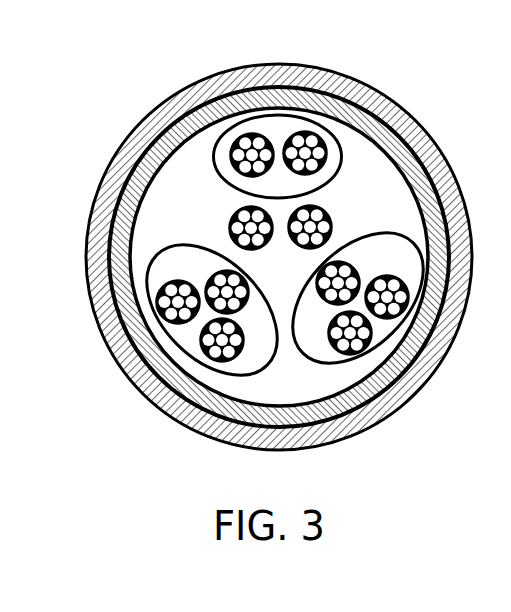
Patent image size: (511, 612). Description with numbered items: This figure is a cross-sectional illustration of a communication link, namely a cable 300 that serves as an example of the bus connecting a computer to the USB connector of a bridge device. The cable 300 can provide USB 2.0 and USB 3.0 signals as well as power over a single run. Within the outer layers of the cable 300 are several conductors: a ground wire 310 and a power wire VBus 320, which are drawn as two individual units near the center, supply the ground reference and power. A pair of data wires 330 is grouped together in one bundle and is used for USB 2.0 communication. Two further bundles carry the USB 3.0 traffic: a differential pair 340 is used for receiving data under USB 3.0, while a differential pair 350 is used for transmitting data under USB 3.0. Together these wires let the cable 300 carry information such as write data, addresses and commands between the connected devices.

The cable 300 is at (125, 67).
The ground wire 310 is at (232, 218).
The power wire VBus 320 is at (330, 215).
The data wires 330 is at (331, 131).
The differential pair 340 is at (226, 374).
The differential pair 350 is at (402, 358).